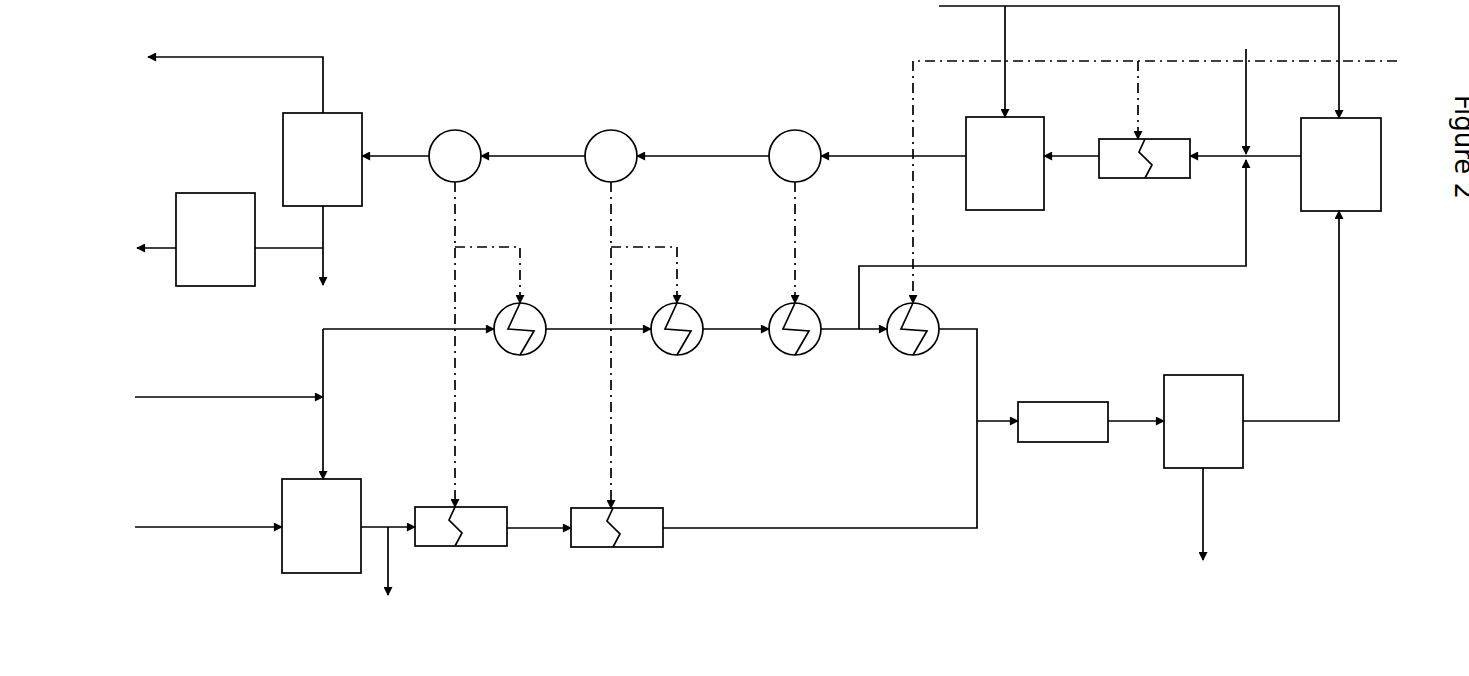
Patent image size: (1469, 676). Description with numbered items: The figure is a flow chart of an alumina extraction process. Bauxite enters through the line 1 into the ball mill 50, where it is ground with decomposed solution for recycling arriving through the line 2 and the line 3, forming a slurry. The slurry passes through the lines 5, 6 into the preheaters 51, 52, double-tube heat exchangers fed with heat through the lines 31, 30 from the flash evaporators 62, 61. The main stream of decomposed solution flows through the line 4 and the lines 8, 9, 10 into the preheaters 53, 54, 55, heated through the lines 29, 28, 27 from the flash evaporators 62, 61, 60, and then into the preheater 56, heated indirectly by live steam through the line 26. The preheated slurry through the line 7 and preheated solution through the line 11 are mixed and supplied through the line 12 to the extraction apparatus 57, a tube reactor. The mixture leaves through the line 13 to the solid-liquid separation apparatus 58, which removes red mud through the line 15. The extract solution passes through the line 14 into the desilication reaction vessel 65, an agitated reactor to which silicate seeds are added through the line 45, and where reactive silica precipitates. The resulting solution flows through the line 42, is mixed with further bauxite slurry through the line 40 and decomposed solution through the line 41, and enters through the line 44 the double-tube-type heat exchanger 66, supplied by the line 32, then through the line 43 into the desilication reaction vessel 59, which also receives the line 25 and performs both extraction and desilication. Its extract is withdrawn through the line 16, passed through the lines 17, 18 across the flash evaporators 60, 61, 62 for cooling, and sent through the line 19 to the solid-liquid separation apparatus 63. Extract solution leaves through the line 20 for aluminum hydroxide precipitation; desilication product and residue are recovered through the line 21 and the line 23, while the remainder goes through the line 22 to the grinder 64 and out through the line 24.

The line for supplying bauxite 1 is at (208, 515).
The line for supplying decomposed solution for recycling 2 is at (229, 379).
The line 3 is at (308, 404).
The line 4 is at (408, 310).
The line 5 is at (388, 514).
The line 6 is at (539, 513).
The line 7 is at (820, 474).
The line 8 is at (598, 311).
The line 9 is at (736, 311).
The line 10 is at (852, 311).
The line 11 is at (958, 358).
The line 12 is at (997, 399).
The line 13 is at (1136, 400).
The line 14 is at (1312, 316).
The line 15 is at (1183, 514).
The line 16 is at (893, 139).
The line 17 is at (703, 137).
The line 18 is at (533, 136).
The line 19 is at (395, 137).
The line 20 is at (235, 67).
The line 21 is at (343, 227).
The line 22 is at (289, 229).
The line 23 is at (343, 269).
The line 24 is at (154, 229).
The line 25 is at (984, 61).
The line 26 is at (1155, 182).
The line 27 is at (816, 242).
The line 28 is at (653, 264).
The line 29 is at (495, 264).
The line 30 is at (631, 345).
The line 31 is at (474, 344).
The line 32 is at (1165, 100).
The line 40 is at (817, 323).
The line 41 is at (1052, 244).
The line 42 is at (1273, 137).
The line 43 is at (1071, 139).
The line 44 is at (1218, 139).
The line 45 is at (1139, 62).
The ball mill 50 is at (321, 541).
The preheater 51 is at (461, 542).
The preheater 52 is at (617, 544).
The preheater 53 is at (520, 345).
The preheater 54 is at (677, 345).
The preheater 55 is at (795, 345).
The preheater 56 is at (913, 345).
The extraction apparatus 57 is at (1063, 438).
The solid-liquid separation apparatus 58 is at (1203, 409).
The desilication reaction vessel 59 is at (1005, 180).
The flash evaporator for cooling 60 is at (795, 144).
The flash evaporator for cooling 61 is at (611, 144).
The flash evaporator for cooling 62 is at (455, 144).
The solid-liquid separation apparatus 63 is at (302, 159).
The grinder 64 is at (215, 256).
The desilication reaction vessel 65 is at (1341, 180).
The double-tube-type heat exchanger 66 is at (1144, 177).